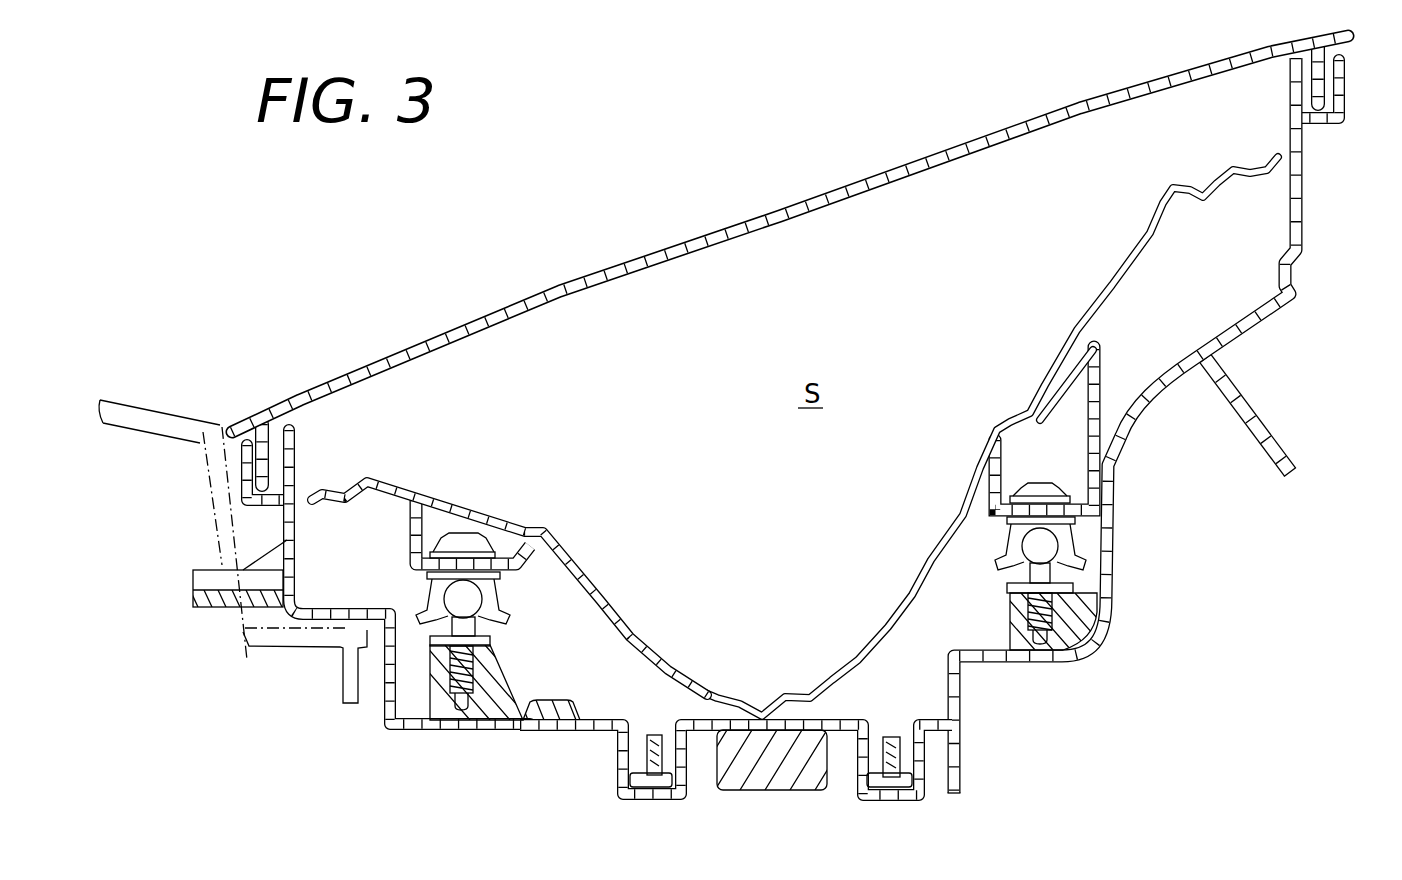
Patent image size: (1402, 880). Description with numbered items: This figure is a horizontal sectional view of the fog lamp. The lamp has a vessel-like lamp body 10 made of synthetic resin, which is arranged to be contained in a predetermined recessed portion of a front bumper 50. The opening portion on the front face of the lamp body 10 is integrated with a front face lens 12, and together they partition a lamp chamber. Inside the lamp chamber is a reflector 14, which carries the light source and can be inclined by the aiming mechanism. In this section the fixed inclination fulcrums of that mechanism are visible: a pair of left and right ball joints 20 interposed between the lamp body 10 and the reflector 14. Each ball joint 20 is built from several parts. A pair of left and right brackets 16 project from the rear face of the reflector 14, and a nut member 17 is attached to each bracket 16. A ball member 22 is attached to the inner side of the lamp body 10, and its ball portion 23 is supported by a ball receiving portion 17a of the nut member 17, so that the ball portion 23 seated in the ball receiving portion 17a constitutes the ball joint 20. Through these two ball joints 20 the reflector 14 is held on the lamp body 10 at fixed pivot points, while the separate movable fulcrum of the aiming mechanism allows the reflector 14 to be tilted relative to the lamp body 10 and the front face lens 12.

The lamp body 10 is at (1120, 533).
The front face lens 12 is at (763, 214).
The reflector 14 is at (612, 626).
The bracket 16 is at (410, 540).
The nut member 17 is at (427, 580).
The ball receiving portion 17a is at (440, 606).
The ball joint 20 is at (377, 777).
The ball member 22 is at (447, 600).
The ball portion 23 is at (430, 640).
The front bumper 50 is at (142, 398).